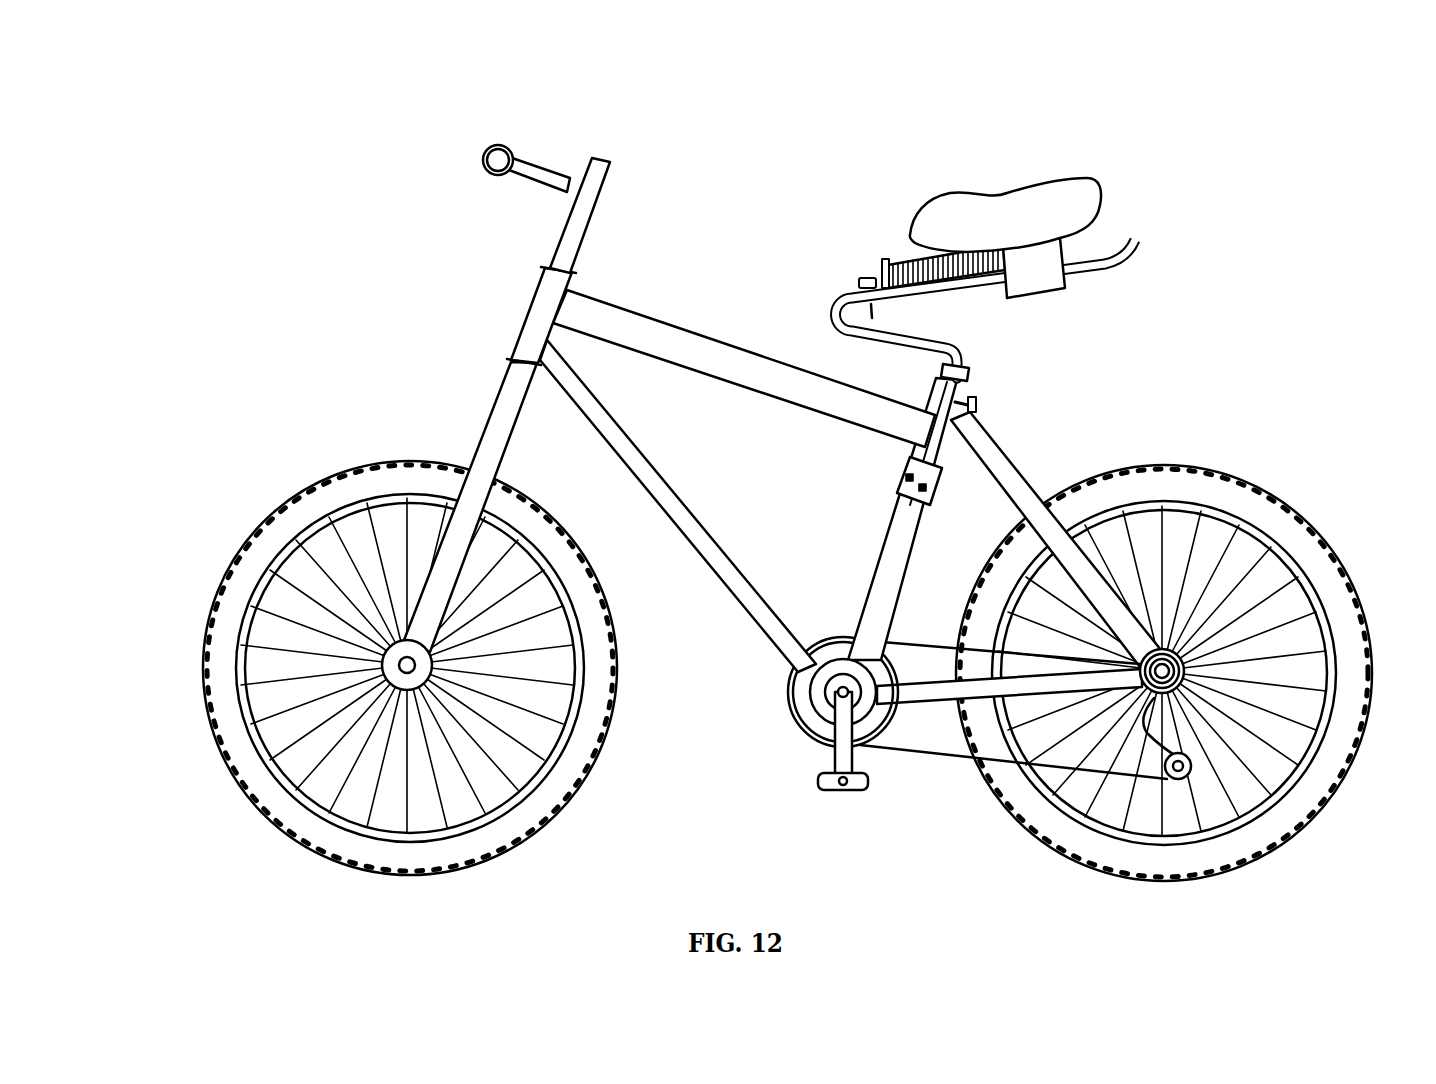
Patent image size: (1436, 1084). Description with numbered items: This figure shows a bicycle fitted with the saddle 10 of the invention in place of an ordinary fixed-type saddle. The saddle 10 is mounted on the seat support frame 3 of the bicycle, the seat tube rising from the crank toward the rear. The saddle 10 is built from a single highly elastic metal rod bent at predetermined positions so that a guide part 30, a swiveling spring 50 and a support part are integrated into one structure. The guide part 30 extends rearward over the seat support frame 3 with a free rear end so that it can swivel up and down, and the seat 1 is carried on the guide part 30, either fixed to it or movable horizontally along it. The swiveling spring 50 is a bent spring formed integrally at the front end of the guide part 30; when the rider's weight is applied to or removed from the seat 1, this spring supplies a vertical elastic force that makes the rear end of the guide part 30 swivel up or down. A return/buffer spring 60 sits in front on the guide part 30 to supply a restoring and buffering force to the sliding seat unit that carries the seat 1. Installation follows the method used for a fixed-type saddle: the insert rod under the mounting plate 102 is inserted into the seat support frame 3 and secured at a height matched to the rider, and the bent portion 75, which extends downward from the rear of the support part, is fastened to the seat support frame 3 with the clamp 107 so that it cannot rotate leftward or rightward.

The seat 1 is at (1027, 203).
The saddle 10 is at (915, 180).
The guide part 30 is at (1097, 248).
The return/buffer spring 60 is at (907, 260).
The swiveling spring 50 is at (833, 306).
The mounting plate 102 is at (968, 372).
The seat support frame 3 is at (905, 543).
The bent portion 75 is at (937, 430).
The clamp 107 is at (900, 486).